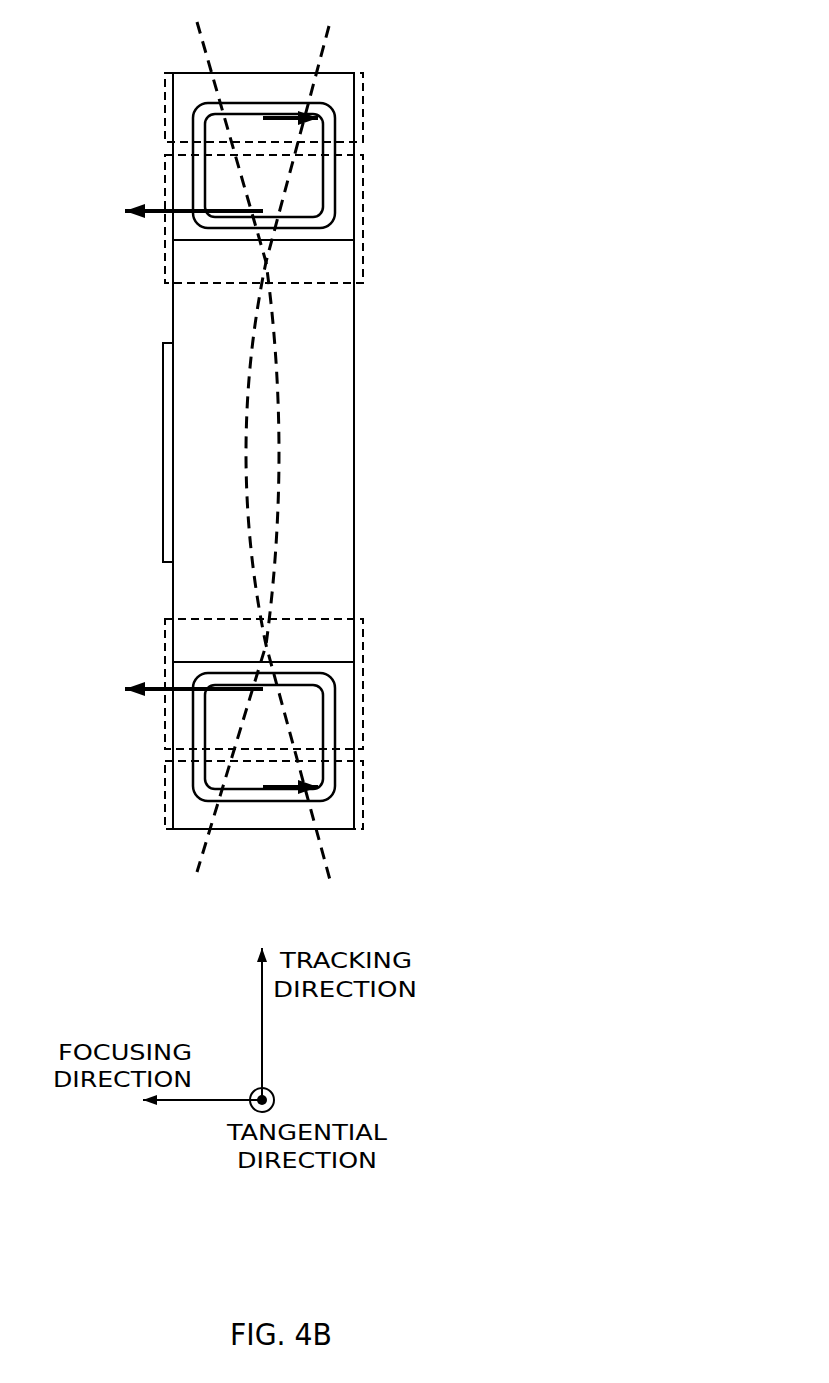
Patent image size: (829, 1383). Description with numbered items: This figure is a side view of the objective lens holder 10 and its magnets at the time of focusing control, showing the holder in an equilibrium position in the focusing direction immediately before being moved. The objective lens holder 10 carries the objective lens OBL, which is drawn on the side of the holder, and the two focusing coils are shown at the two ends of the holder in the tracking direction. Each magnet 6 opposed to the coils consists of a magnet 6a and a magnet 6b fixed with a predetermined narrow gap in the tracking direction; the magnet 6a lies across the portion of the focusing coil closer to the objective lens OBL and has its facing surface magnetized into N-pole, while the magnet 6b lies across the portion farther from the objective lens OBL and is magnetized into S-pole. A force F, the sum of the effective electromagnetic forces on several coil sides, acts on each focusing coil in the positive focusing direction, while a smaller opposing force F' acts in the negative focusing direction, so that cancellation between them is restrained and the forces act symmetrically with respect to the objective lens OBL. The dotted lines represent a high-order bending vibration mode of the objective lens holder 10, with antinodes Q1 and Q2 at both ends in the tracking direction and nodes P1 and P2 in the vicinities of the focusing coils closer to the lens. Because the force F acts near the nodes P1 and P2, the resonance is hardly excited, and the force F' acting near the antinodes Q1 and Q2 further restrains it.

The magnet 6 is at (148, 124).
The magnet 6a is at (162, 253).
The magnet 6b is at (162, 83).
The objective lens holder 10 is at (136, 377).
The objective lens OBL is at (163, 453).
The antinode Q1 is at (365, 72).
The antinode Q2 is at (365, 830).
The node P1 is at (267, 261).
The node P2 is at (267, 641).
The force F is at (194, 454).
The force F' is at (290, 454).